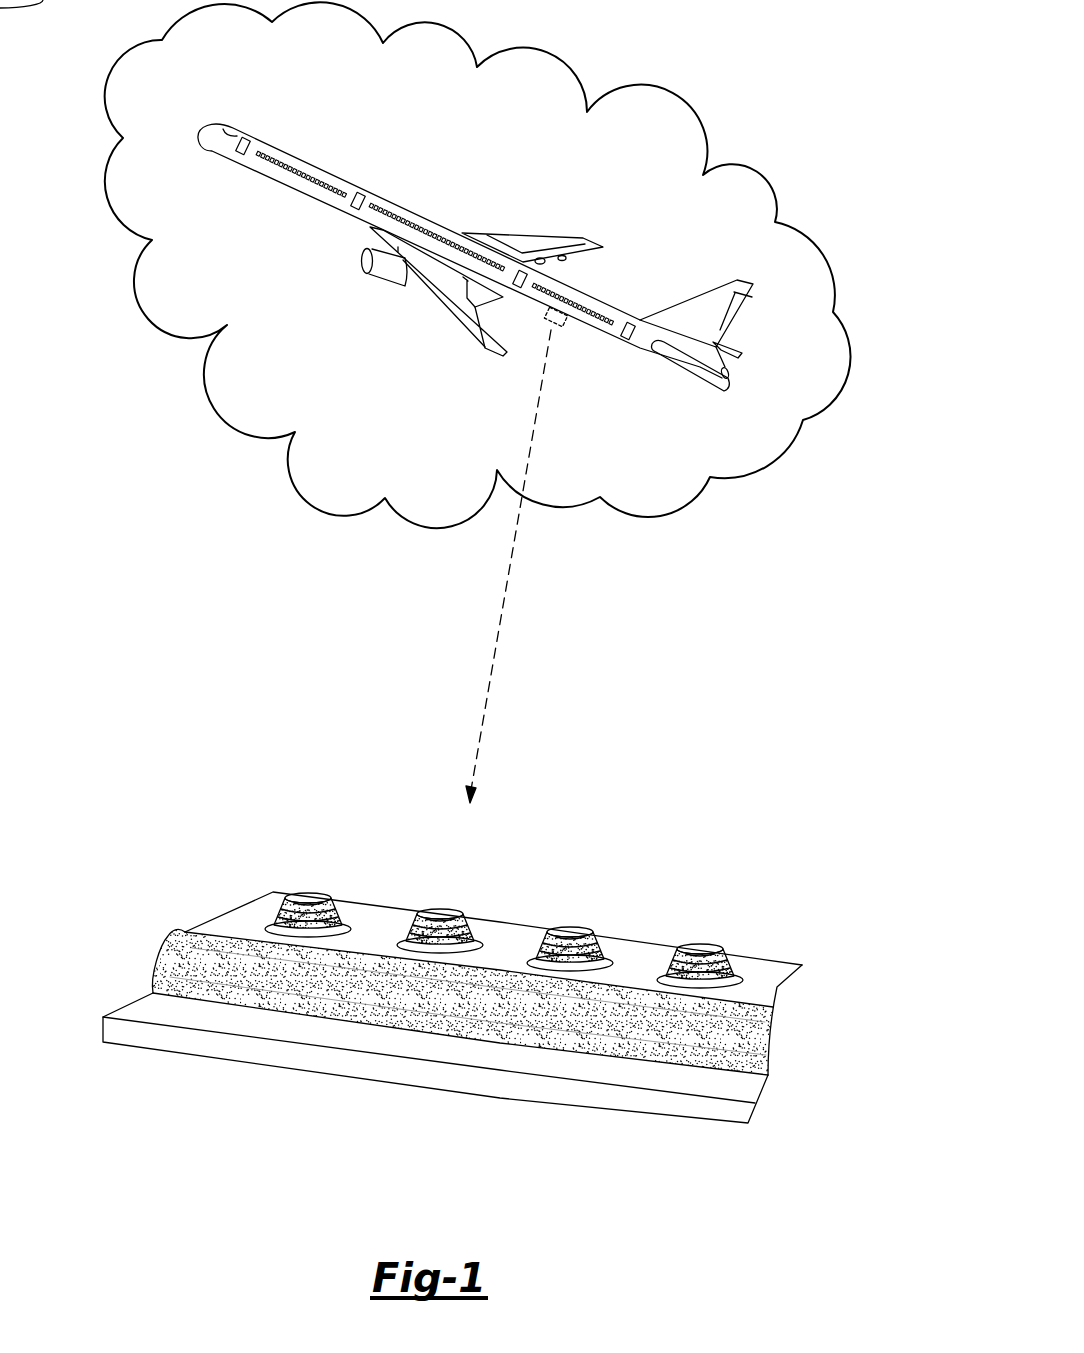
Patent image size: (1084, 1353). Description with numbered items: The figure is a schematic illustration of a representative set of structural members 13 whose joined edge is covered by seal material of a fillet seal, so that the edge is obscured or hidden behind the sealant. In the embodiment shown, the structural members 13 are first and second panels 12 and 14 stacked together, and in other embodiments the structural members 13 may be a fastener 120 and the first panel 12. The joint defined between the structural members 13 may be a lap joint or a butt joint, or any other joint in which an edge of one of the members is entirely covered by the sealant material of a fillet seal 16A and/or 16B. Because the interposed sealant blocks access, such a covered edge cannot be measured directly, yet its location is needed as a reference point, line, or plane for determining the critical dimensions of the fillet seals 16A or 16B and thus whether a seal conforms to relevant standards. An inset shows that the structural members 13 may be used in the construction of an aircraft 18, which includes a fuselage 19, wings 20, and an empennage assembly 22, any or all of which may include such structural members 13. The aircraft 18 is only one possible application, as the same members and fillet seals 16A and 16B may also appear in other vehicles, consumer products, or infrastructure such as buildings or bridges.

The fuselage 19 is at (338, 166).
The wings 20 is at (550, 235).
The aircraft 18 is at (497, 188).
The empennage assembly 22 is at (767, 402).
The structural members 13 is at (563, 323).
The first panel 12 is at (782, 987).
The second panel 14 is at (758, 1090).
The fillet seal 16A is at (150, 968).
The fillet seal 16B is at (730, 967).
The fastener 120 is at (311, 900).